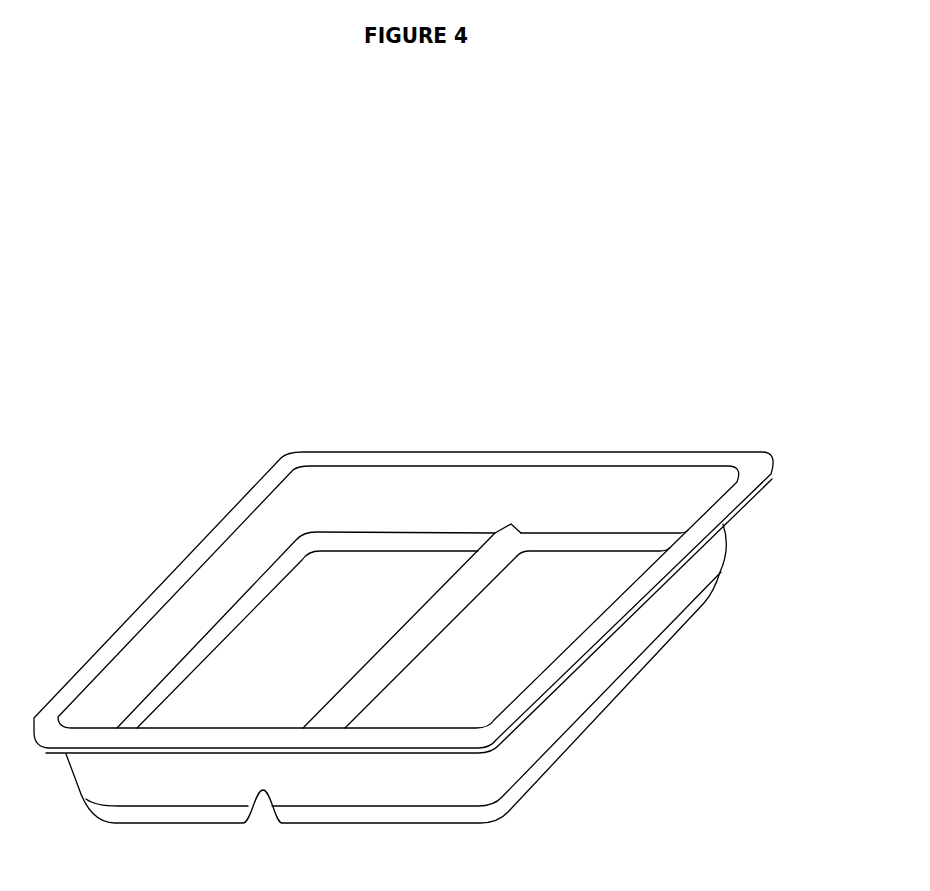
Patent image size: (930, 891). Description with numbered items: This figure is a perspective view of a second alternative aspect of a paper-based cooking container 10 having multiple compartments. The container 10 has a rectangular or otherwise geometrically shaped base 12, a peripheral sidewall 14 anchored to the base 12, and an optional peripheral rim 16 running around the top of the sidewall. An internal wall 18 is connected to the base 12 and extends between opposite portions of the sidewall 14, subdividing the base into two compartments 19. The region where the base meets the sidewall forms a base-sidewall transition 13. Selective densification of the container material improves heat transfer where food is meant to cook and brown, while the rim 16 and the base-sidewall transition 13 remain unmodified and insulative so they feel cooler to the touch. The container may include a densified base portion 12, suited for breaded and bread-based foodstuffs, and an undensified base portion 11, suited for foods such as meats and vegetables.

The paper-based container 10 is at (660, 272).
The undensified base portion 11 is at (537, 641).
The base 12 is at (395, 565).
The base-sidewall transition 13 is at (556, 545).
The peripheral sidewall 14 is at (604, 497).
The peripheral rim 16 is at (752, 465).
The internal walls 18 is at (489, 565).
The compartments 19 is at (315, 693).